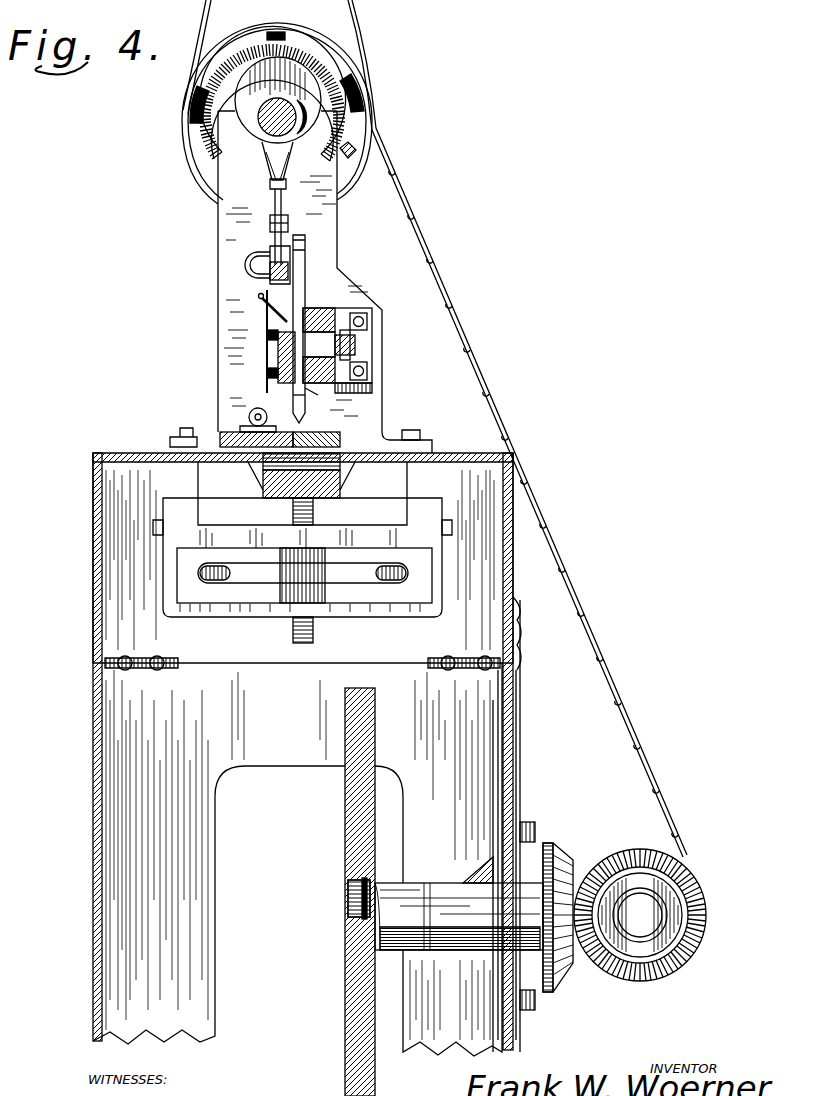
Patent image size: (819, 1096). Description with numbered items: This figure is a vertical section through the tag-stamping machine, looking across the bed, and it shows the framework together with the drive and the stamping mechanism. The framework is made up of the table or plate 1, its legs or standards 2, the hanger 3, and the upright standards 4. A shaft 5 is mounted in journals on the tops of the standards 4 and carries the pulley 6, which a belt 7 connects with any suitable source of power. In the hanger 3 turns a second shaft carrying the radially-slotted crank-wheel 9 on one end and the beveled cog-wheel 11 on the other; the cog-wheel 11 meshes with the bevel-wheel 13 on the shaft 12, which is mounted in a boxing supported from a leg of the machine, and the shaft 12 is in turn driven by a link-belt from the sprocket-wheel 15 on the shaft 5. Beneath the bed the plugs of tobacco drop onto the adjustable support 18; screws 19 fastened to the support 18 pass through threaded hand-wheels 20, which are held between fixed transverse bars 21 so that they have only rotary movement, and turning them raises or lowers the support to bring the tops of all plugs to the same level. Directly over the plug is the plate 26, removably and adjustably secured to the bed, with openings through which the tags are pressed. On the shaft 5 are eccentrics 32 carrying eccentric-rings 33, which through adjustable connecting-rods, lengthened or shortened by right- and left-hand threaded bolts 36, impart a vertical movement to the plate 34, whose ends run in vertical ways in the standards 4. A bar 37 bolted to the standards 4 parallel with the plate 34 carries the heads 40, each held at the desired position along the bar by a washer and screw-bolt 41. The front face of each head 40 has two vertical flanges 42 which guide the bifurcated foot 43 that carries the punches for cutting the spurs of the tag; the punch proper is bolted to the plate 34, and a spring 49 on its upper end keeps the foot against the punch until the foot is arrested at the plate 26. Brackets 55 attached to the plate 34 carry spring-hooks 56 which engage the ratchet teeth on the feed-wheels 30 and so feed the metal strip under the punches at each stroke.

The table or plate 1 is at (93, 618).
The legs or standards 2 is at (93, 985).
The hanger 3 is at (505, 768).
The standards 4 is at (356, 222).
The shaft 5 is at (258, 117).
The pulley 6 is at (318, 30).
The belt 7 is at (214, 18).
The radially-slotted crank-wheel 9 is at (345, 796).
The beveled cog-wheel 11 is at (556, 848).
The shaft 12 is at (648, 915).
The bevel-wheel 13 is at (695, 876).
The sprocket-wheel 15 is at (358, 155).
The adjustable support 18 is at (345, 490).
The screws 19 is at (292, 513).
The threaded hand-wheels 20 is at (248, 576).
The fixed transverse bars 21 is at (220, 478).
The plate 26 is at (330, 437).
The feed-wheels 30 is at (250, 417).
The eccentrics 32 is at (310, 100).
The eccentric-rings 33 is at (305, 64).
The plate 34 is at (278, 352).
The bolts 36 is at (276, 196).
The bar 37 is at (342, 312).
The heads 40 is at (310, 300).
The washer and screw-bolt 41 is at (355, 337).
The vertical flanges 42 is at (324, 399).
The bifurcated foot 43 is at (300, 401).
The spring 49 is at (247, 269).
The brackets 55 is at (260, 300).
The spring-hooks 56 is at (266, 378).